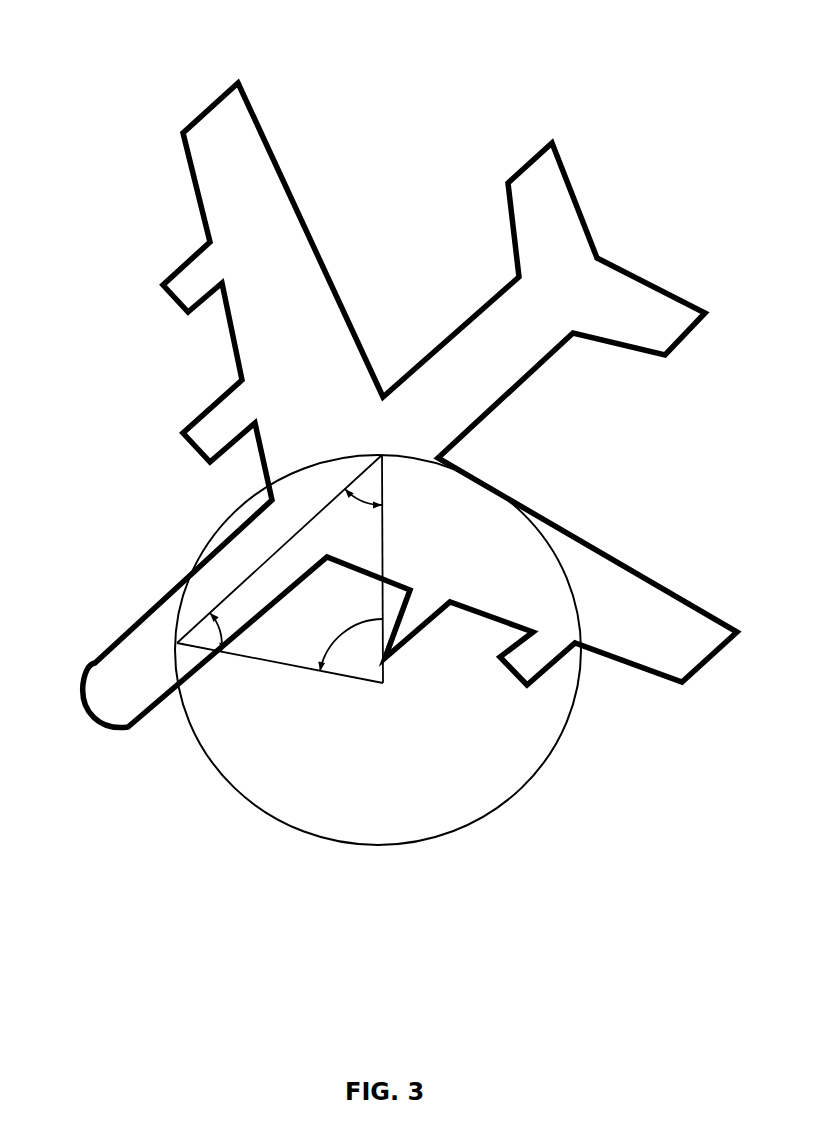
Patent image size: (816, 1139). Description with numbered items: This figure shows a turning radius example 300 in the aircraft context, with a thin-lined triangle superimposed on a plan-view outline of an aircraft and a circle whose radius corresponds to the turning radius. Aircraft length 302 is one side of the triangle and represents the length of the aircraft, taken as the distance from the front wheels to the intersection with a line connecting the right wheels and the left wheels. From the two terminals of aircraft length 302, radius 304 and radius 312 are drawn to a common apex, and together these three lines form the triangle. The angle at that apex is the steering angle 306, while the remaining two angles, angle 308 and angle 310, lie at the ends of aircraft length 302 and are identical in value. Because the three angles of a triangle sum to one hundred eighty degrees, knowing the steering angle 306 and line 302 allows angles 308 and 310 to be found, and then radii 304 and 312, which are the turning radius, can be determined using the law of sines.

The turning radius example 300 is at (122, 43).
The aircraft length 302 is at (258, 568).
The radius 304 is at (383, 575).
The steering angle Φ 306 is at (376, 618).
The angle 308 is at (370, 486).
The angle 310 is at (203, 638).
The radius 312 is at (260, 660).